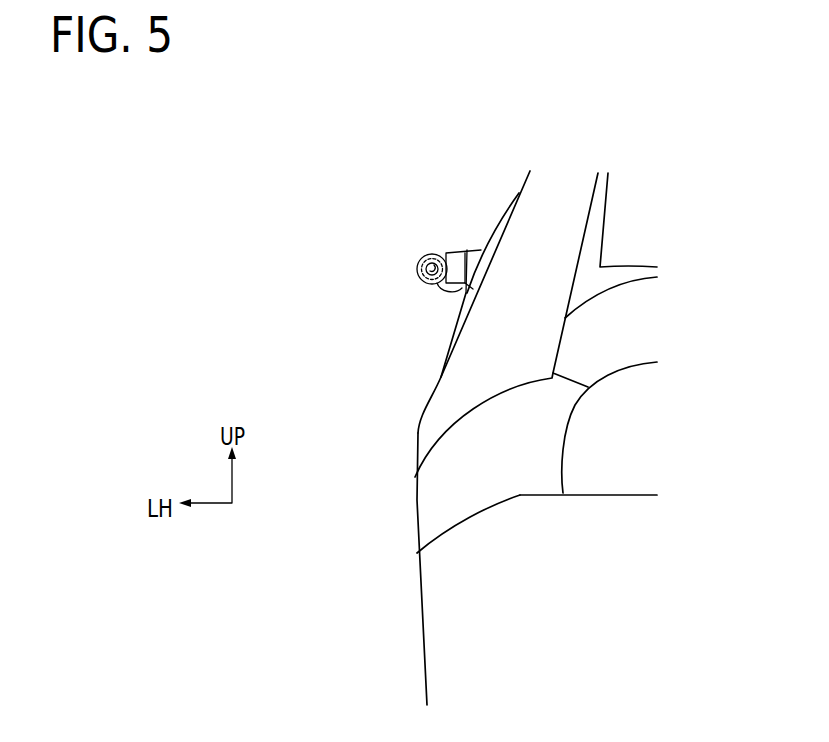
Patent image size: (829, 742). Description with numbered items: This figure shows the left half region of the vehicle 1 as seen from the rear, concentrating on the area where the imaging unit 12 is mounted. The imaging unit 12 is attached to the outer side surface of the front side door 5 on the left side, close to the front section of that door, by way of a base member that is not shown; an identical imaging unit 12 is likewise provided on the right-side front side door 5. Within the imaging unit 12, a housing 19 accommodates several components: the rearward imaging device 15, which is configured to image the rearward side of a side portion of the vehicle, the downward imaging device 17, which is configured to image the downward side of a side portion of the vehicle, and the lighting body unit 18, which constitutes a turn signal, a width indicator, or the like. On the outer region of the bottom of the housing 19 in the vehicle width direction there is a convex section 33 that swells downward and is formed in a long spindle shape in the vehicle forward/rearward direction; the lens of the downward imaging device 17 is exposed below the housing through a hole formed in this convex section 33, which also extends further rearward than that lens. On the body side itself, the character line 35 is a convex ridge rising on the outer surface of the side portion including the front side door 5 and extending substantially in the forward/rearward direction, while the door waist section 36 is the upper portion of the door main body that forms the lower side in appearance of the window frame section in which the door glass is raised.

The vehicle 1 is at (514, 160).
The front side door 5 is at (452, 333).
The imaging unit 12 is at (423, 254).
The rearward imaging device 15 is at (423, 280).
The downward imaging device 17 is at (436, 291).
The lighting body unit 18 is at (417, 266).
The housing 19 is at (458, 253).
The convex section 33 is at (452, 300).
The character line 35 is at (468, 250).
The door waist section 36 is at (516, 185).